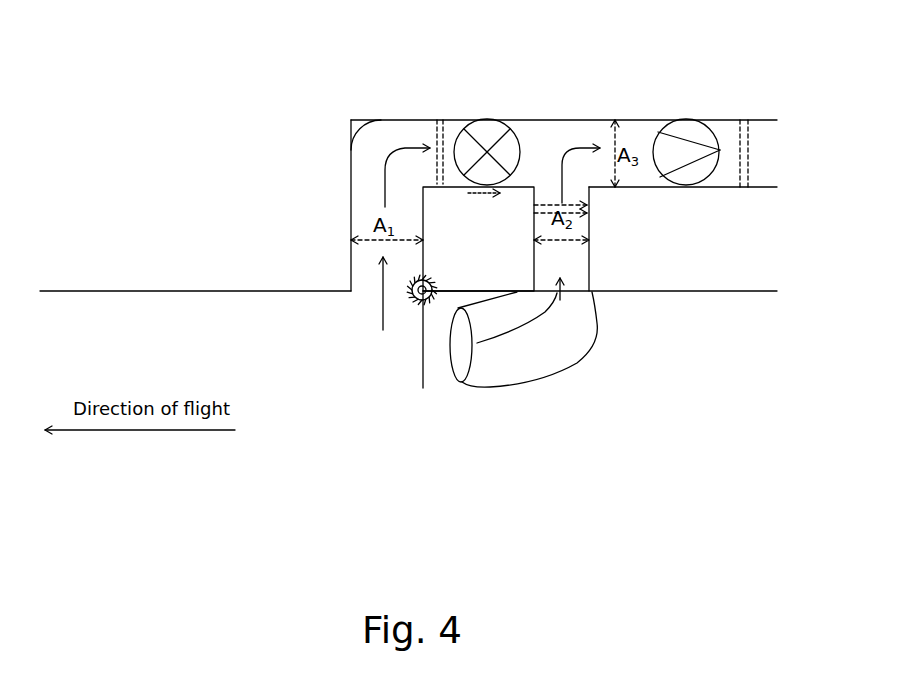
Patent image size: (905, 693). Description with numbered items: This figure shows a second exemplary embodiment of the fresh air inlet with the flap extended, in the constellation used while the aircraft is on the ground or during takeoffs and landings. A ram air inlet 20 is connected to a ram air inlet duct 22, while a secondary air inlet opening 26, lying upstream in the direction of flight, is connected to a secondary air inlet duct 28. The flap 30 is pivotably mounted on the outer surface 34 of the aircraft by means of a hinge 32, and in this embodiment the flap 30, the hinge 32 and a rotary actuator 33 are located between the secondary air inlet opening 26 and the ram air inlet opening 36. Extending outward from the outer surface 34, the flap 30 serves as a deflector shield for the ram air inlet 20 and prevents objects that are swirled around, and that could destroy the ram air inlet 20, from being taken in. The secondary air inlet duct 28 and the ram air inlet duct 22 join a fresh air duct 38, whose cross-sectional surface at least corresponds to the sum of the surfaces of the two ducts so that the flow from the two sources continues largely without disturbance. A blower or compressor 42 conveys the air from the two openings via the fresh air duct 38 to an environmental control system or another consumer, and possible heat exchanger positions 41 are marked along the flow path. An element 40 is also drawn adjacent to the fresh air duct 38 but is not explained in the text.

The ram air inlet 20 is at (577, 355).
The ram air inlet duct 22 is at (585, 265).
The secondary air inlet opening 26 is at (362, 303).
The secondary air inlet duct 28 is at (360, 172).
The flap 30 is at (420, 368).
The hinge 32 is at (428, 283).
The rotary actuator 33 is at (416, 300).
The outer surface 34 is at (292, 293).
The ram air inlet opening 36 is at (452, 372).
The fresh air duct 38 is at (648, 130).
The heat exchanger 40 is at (492, 130).
The heat exchanger positions 41 is at (437, 118).
The blower or compressor 42 is at (688, 181).